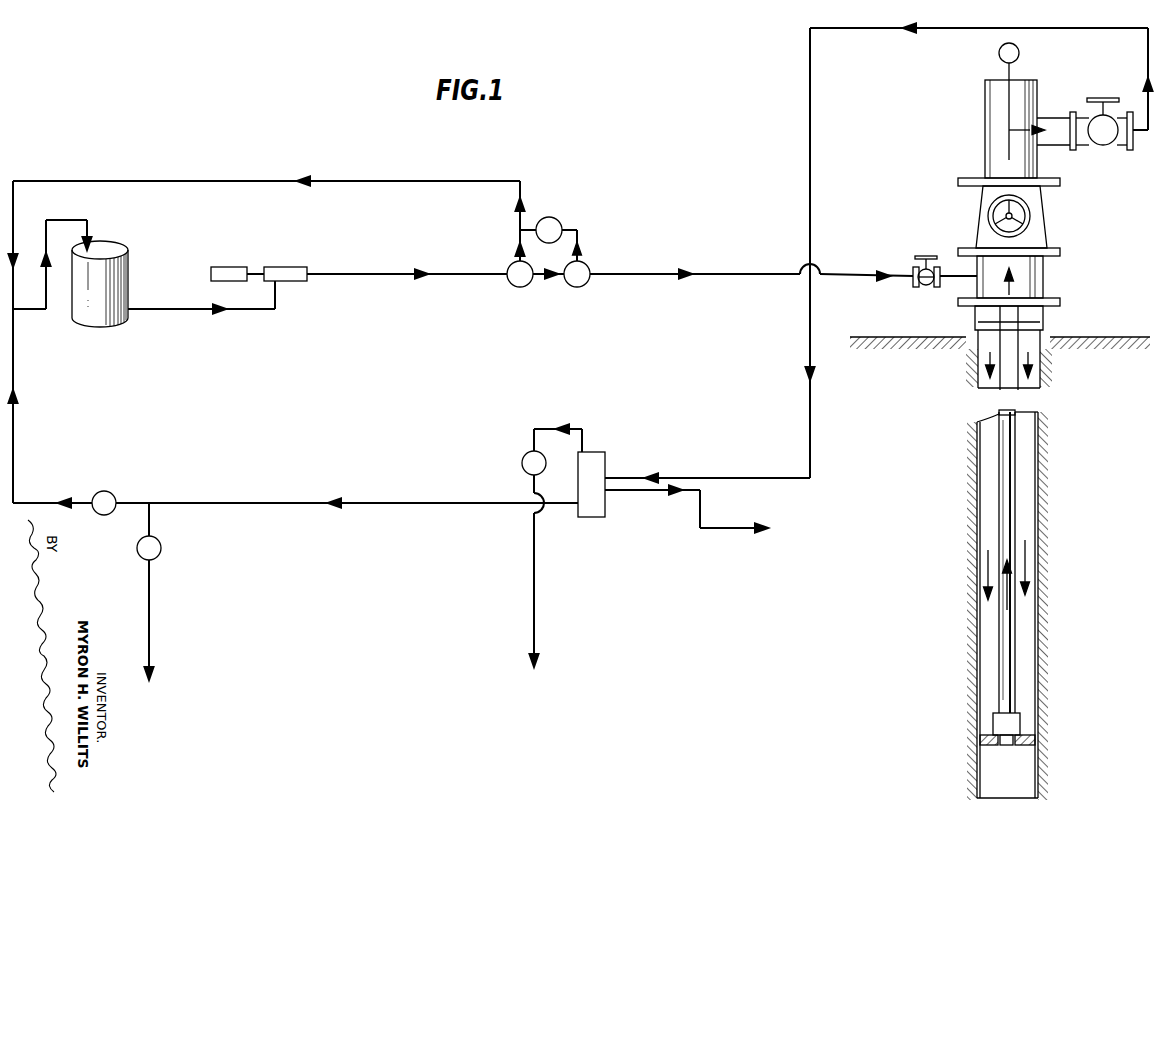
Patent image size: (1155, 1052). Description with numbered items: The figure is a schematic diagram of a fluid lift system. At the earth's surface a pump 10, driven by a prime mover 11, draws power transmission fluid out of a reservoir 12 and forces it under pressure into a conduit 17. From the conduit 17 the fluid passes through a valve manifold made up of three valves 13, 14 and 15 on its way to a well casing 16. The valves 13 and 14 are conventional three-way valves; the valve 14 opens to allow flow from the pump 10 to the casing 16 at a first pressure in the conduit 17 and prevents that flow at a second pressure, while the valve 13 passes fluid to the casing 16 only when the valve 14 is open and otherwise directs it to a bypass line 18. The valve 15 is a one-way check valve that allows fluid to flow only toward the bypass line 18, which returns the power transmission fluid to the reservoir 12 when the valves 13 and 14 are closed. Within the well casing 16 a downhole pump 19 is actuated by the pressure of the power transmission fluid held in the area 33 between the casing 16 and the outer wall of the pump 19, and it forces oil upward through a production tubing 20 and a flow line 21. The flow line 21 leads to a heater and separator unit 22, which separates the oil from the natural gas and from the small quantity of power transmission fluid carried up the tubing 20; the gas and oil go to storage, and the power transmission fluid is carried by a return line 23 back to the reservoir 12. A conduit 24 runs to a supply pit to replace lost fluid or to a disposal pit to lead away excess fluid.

The pump 10 is at (294, 282).
The prime mover 11 is at (229, 282).
The reservoir 12 is at (112, 248).
The valve 13 is at (525, 287).
The valve 14 is at (583, 287).
The valve 15 is at (557, 222).
The well casing 16 is at (975, 316).
The conduit 17 is at (473, 274).
The bypass line 18 is at (435, 181).
The pump 19 is at (1022, 723).
The production tubing 20 is at (1018, 411).
The flow line 21 is at (810, 131).
The heater and separator unit 22 is at (598, 467).
The return line 23 is at (281, 503).
The conduit 24 is at (152, 640).
The area 33 is at (1025, 514).